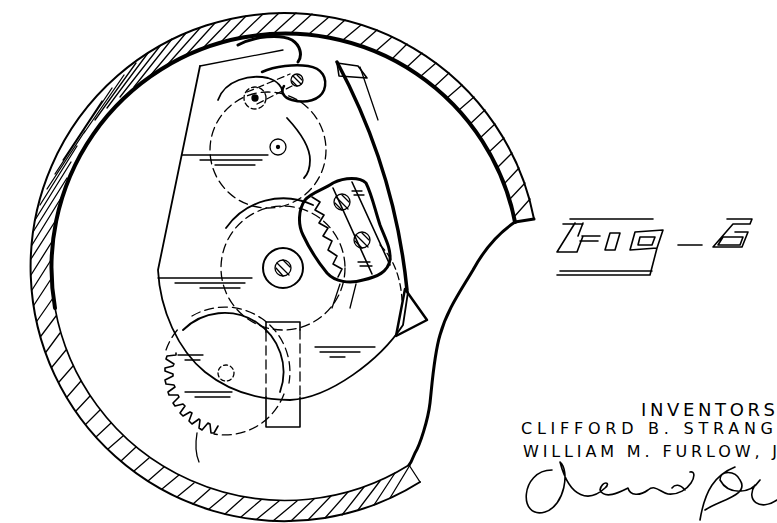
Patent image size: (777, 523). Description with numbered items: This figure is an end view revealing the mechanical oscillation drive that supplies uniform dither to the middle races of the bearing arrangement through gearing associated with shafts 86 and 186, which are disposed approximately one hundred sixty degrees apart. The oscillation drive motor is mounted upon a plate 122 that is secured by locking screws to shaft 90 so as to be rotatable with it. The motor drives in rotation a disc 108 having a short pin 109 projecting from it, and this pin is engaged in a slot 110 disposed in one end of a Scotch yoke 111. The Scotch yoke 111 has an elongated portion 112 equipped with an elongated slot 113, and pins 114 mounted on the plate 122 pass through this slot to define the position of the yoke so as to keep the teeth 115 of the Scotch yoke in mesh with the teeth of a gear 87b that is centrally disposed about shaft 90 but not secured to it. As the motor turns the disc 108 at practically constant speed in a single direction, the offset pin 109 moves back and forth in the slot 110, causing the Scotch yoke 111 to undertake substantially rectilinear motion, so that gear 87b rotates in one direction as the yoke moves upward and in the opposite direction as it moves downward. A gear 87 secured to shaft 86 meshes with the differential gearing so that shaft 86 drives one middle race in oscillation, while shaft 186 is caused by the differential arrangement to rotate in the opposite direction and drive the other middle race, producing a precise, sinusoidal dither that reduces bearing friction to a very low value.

The shaft 86 is at (270, 148).
The gear 87 is at (347, 133).
The gear 87b is at (235, 215).
The shaft 90 is at (291, 282).
The disc 108 is at (294, 45).
The pin 109 is at (359, 75).
The slot 110 is at (243, 100).
The Scotch yoke 111 is at (372, 104).
The elongated portion 112 is at (413, 292).
The elongated slot 113 is at (356, 215).
The pins 114 is at (378, 234).
The teeth 115 is at (352, 288).
The plate 122 is at (393, 170).
The shaft 186 is at (217, 376).